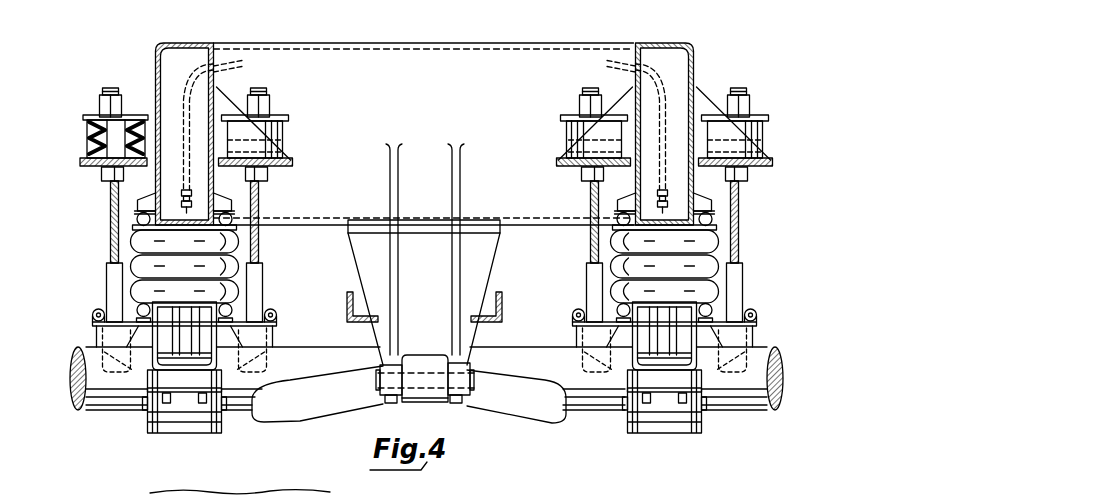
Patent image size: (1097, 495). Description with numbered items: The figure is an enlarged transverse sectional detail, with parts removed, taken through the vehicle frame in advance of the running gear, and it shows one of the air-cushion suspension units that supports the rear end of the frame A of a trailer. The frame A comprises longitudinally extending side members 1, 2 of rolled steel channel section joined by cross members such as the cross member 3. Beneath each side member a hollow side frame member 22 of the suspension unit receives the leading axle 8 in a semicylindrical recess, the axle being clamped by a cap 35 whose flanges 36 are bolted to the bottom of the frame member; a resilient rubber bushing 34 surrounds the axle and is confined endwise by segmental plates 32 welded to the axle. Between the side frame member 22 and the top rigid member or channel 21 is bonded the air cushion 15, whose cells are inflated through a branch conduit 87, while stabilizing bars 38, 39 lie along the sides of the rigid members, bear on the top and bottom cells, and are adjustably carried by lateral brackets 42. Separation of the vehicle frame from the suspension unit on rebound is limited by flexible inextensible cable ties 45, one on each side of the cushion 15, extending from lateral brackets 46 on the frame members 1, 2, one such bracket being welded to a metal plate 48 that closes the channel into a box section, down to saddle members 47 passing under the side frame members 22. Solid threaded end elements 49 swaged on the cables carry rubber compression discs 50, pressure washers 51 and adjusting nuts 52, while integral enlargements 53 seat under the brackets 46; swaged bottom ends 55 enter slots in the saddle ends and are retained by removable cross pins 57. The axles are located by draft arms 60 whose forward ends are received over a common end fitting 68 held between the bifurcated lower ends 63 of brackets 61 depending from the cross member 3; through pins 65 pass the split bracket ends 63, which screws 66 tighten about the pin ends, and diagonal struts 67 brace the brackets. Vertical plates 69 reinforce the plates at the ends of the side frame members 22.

The side member 1 is at (681, 134).
The side member 2 is at (168, 134).
The cross member 3 is at (478, 80).
The axle 8 is at (753, 407).
The air cushion 15 is at (425, 264).
The top rigid member or channel 21 is at (349, 193).
The side frame member 22 is at (426, 325).
The segmental plate 32 is at (359, 426).
The rubber bushing 34 is at (418, 413).
The cap 35 is at (398, 418).
The flange 36 is at (678, 429).
The stabilizing bar 38 is at (742, 212).
The stabilizing bar 39 is at (676, 293).
The lateral bracket 42 is at (414, 207).
The flexible inextensible element 45 is at (536, 222).
The lateral bracket 46 is at (82, 166).
The saddle member 47 is at (522, 292).
The metal plate 48 is at (423, 45).
The solid metal element 49 is at (68, 88).
The rubber compression disc 50 is at (88, 134).
The pressure plate or washer 51 is at (88, 113).
The adjusting nut 52 is at (518, 126).
The integral enlargement 53 is at (275, 180).
The tie bottom end 55 is at (176, 347).
The cross pin 57 is at (426, 309).
The draft arm 60 is at (331, 408).
The depending bracket 61 is at (353, 252).
The bracket lower end 63 is at (380, 380).
The through pin 65 is at (473, 380).
The screw 66 is at (393, 405).
The diagonal strut 67 is at (347, 317).
The common fitting 68 is at (432, 403).
The vertical plate 69 is at (395, 266).
The branch conduit 87 is at (416, 66).
The frame A is at (672, 41).